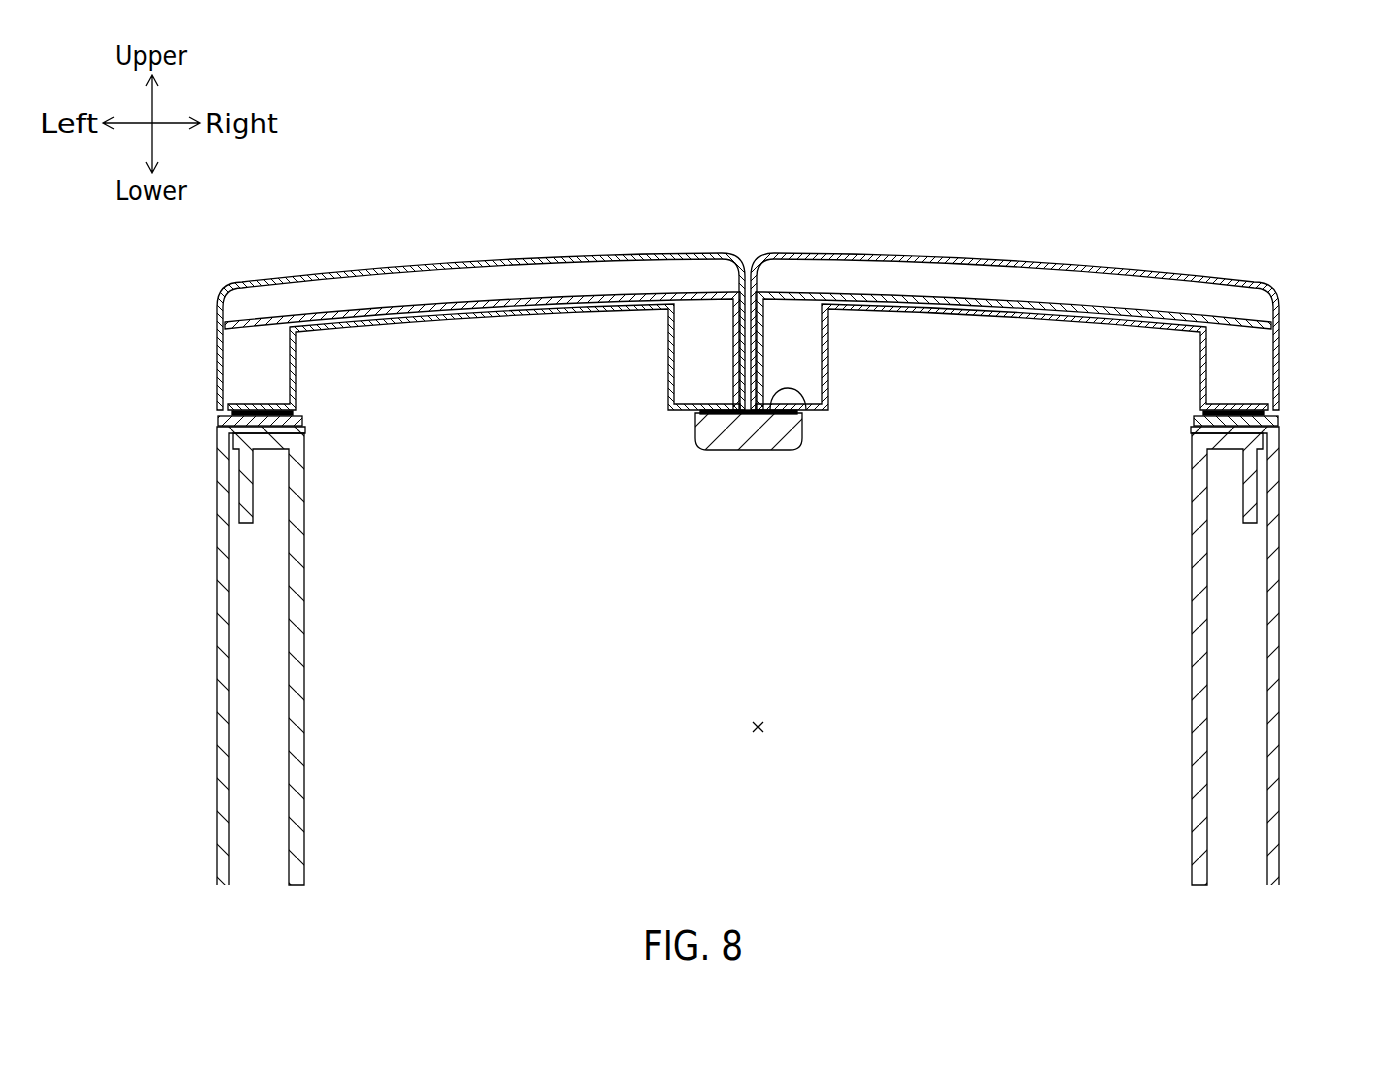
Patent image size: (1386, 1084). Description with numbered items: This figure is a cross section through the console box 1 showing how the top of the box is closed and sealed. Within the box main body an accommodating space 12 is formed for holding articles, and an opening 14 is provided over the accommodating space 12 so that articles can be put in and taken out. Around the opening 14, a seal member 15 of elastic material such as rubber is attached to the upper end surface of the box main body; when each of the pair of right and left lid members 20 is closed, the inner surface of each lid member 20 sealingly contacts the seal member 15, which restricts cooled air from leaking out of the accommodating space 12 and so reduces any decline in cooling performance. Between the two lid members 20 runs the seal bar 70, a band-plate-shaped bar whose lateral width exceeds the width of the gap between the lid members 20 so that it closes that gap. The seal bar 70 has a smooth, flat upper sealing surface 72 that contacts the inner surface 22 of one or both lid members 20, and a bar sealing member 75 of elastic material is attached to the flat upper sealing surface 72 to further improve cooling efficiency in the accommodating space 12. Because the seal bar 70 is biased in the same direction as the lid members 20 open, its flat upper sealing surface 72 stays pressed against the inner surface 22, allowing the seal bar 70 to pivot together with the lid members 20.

The console box 1 is at (1293, 700).
The accommodating space 12 is at (757, 730).
The opening 14 is at (302, 425).
The seal member 15 is at (256, 404).
The lid member 20 is at (222, 278).
The inner surface 22 is at (675, 417).
The seal bar 70 is at (750, 451).
The flat upper sealing surface 72 is at (805, 413).
The bar sealing member 75 is at (728, 414).